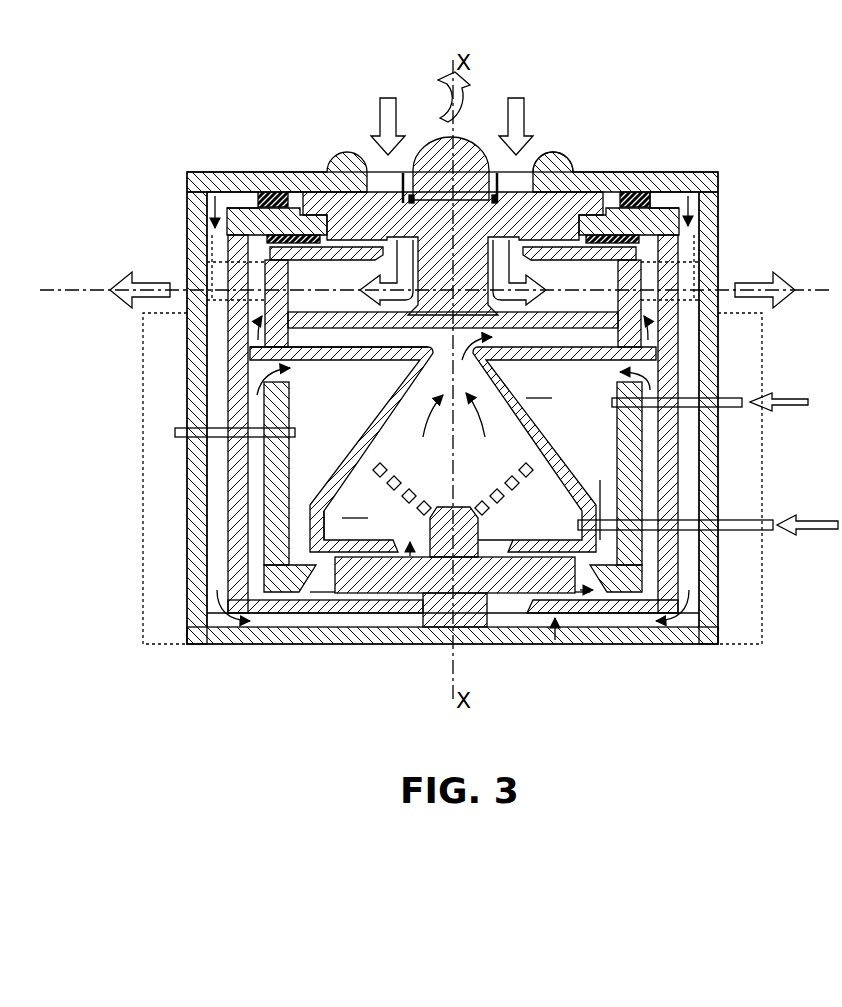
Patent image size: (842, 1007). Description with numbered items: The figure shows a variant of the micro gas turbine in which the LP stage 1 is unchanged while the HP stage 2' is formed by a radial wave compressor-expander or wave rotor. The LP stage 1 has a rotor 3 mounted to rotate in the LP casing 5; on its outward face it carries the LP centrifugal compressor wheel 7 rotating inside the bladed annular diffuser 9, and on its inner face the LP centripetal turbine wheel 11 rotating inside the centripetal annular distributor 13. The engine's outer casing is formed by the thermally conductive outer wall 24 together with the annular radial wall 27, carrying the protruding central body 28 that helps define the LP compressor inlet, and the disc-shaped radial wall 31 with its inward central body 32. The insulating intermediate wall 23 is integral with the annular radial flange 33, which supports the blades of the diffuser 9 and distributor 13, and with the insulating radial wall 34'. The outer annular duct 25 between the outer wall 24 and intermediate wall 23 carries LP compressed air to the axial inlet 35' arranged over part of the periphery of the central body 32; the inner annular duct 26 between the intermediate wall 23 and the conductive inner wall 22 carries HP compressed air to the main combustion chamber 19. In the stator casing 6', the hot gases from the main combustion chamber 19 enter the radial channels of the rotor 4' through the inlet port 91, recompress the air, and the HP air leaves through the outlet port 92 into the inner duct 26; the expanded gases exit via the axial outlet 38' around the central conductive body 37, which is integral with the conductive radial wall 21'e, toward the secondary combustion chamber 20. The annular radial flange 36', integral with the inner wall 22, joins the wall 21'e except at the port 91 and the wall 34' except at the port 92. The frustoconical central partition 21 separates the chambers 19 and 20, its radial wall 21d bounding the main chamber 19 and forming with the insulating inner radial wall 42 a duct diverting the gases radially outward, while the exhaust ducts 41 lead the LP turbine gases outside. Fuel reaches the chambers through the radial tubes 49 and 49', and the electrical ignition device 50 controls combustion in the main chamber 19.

The LP stage 1 is at (326, 135).
The HP stage 2' is at (453, 668).
The rotor 3 is at (512, 205).
The rotor 4' is at (464, 626).
The LP casing 5 is at (580, 166).
The stator casing 6' is at (578, 660).
The LP centrifugal compressor wheel 7 is at (595, 222).
The annular centrifugal diffuser 9 is at (268, 193).
The LP centripetal turbine wheel 11 is at (672, 203).
The centripetal annular distributor 13 is at (335, 240).
The main combustion chamber 19 is at (563, 457).
The secondary combustion chamber 20 is at (347, 517).
The central partition 21 is at (453, 449).
The annular radial wall 21d is at (358, 352).
The conductive radial wall 21'e is at (523, 524).
The inner wall 22 is at (690, 462).
The intermediate wall 23 is at (668, 345).
The outer wall 24 is at (720, 325).
The outer annular duct 25 is at (217, 392).
The inner annular duct 26 is at (648, 416).
The annular radial wall 27 is at (656, 172).
The central body 28 is at (466, 152).
The radial wall 31 is at (400, 628).
The central body 32 is at (442, 623).
The annular radial flange 33 is at (612, 225).
The insulating radial wall 34' is at (325, 649).
The axial inlet 35' is at (590, 661).
The annular radial flange 36' is at (473, 632).
The central conductive body 37 is at (447, 508).
The axial outlet 38' is at (399, 531).
The exhaust ducts 41 is at (325, 298).
The inner radial wall 42 is at (352, 322).
The fuel supply tube 49 is at (711, 391).
The fuel supply tube 49' is at (708, 552).
The ignition device 50 is at (232, 434).
The inlet port 91 is at (322, 597).
The outlet port 92 is at (598, 592).